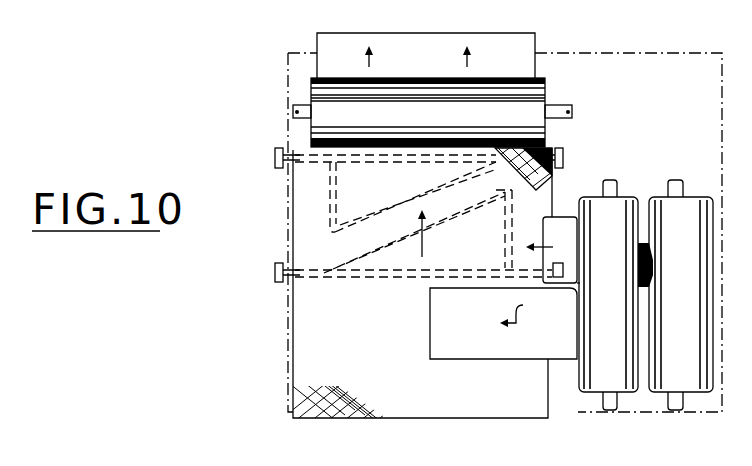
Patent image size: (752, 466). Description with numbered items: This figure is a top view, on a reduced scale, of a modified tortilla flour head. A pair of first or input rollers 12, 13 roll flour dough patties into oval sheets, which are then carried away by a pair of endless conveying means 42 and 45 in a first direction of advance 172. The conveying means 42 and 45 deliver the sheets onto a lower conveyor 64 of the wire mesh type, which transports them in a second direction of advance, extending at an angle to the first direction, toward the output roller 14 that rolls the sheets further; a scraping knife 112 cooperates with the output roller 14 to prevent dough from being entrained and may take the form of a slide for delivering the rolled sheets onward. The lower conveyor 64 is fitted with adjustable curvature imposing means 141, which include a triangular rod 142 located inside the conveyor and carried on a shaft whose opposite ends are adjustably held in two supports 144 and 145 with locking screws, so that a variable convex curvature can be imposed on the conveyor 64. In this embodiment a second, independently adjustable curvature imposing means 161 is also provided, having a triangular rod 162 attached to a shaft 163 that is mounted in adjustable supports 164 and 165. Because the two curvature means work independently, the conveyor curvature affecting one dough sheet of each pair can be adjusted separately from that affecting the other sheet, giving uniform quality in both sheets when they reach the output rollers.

The scraping knife 112 is at (534, 45).
The output roller 14 is at (311, 93).
The support 144 is at (275, 150).
The support 145 is at (563, 152).
The curvature imposing means 141 is at (330, 182).
The triangular rod 142 is at (330, 213).
The triangular rod 162 is at (518, 200).
The curvature imposing means 161 is at (520, 203).
The shaft 163 is at (390, 278).
The adjustable support 164 is at (275, 277).
The adjustable support 165 is at (557, 270).
The endless conveying means 45 is at (573, 243).
The endless conveying means 42 is at (462, 327).
The first direction of advance 172 is at (534, 309).
The conveyor 64 is at (307, 366).
The input roller 12 is at (598, 388).
The input roller 13 is at (660, 395).